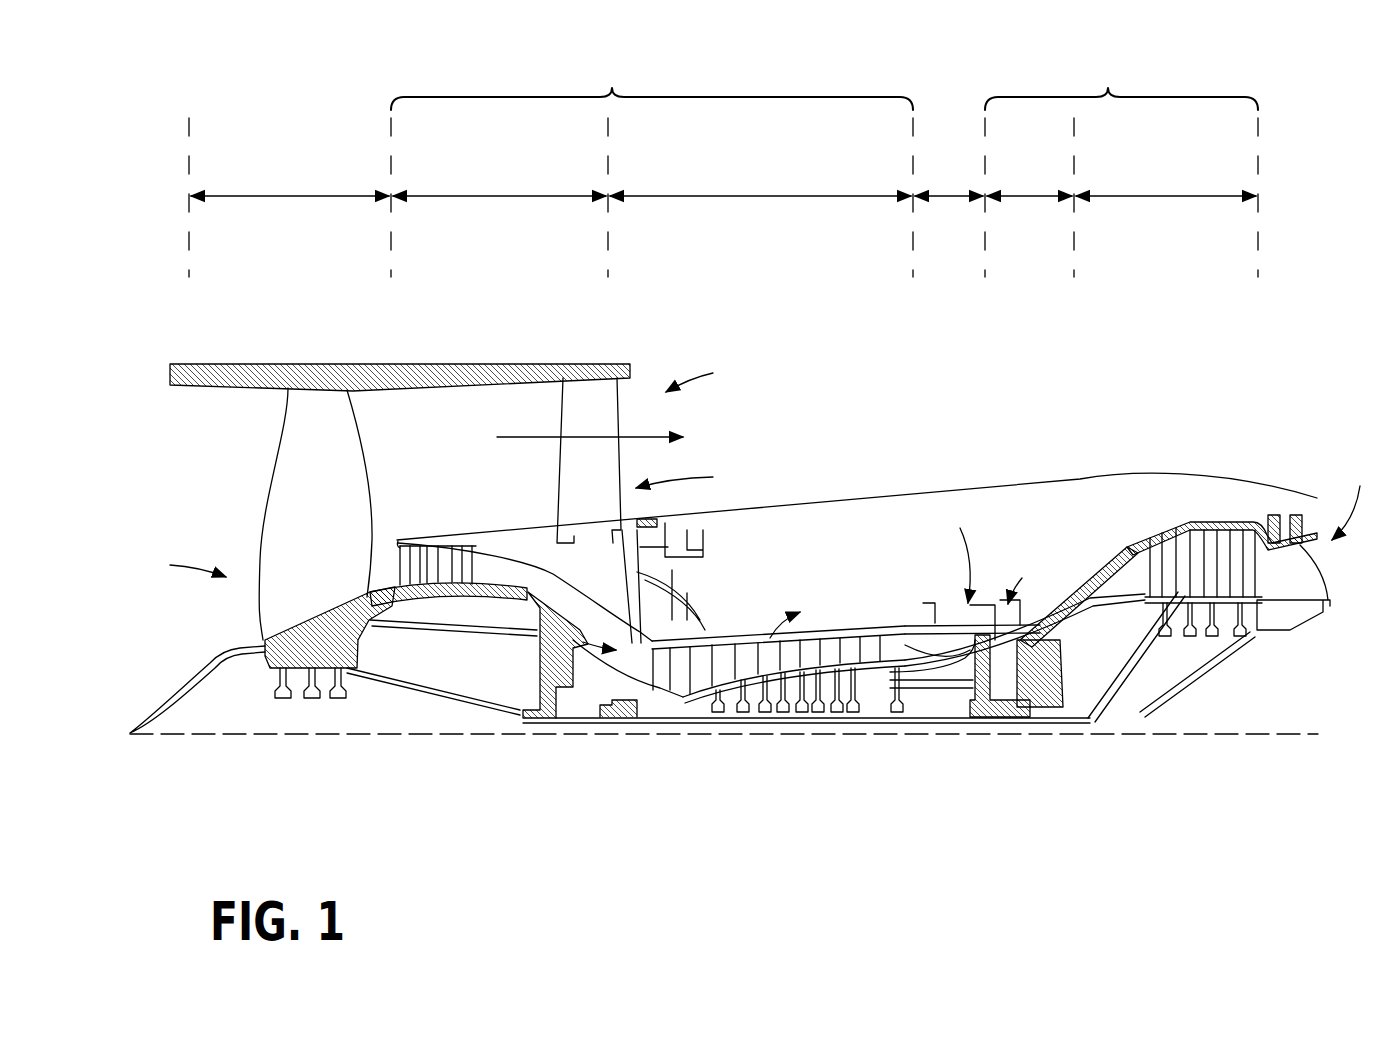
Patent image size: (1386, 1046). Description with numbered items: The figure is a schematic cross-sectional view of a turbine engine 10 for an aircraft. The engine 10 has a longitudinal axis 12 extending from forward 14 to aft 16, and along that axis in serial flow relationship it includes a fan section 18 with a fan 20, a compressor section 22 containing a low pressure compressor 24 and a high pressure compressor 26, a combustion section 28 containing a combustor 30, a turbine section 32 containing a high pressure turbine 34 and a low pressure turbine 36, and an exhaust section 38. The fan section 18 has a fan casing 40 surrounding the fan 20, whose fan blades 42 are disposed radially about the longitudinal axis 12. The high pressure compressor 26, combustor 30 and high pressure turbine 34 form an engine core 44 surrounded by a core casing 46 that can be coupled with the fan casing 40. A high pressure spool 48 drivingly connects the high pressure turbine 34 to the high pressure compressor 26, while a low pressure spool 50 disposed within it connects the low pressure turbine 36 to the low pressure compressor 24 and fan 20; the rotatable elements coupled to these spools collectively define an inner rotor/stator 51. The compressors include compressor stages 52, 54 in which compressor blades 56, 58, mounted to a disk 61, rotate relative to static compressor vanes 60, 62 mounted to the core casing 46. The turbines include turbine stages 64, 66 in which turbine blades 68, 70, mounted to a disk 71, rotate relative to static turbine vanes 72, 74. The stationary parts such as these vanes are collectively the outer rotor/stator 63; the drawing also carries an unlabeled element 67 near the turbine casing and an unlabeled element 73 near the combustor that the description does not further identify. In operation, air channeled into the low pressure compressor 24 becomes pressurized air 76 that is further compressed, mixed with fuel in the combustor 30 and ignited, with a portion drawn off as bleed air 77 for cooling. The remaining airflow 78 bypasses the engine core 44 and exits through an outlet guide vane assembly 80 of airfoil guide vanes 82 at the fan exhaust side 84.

The turbine engine 10 is at (942, 352).
The longitudinal axis 12 is at (290, 736).
The forward 14 is at (137, 500).
The aft 16 is at (1349, 582).
The fan section 18 is at (290, 197).
The fan 20 is at (181, 563).
The compressor section 22 is at (652, 85).
The low pressure compressor 24 is at (500, 197).
The high pressure compressor 26 is at (761, 197).
The combustion section 28 is at (950, 197).
The combustor 30 is at (952, 630).
The turbine section 32 is at (1121, 85).
The high pressure turbine 34 is at (1030, 197).
The low pressure turbine 36 is at (1167, 197).
The exhaust section 38 is at (1233, 590).
The fan casing 40 is at (425, 364).
The fan blades 42 is at (345, 443).
The engine core 44 is at (900, 532).
The core casing 46 is at (1125, 548).
The HP shaft or spool 48 is at (927, 692).
The LP shaft or spool 50 is at (540, 724).
The inner rotor/stator 51 is at (797, 728).
The compressor stages 52 is at (455, 484).
The compressor stages 54 is at (748, 536).
The compressor blades 56 is at (428, 545).
The compressor blades 58 is at (680, 625).
The static compressor vanes 60 is at (405, 545).
The disk 61 is at (425, 590).
The static compressor vanes 62 is at (670, 600).
The outer rotor/stator 63 is at (660, 692).
The turbine stages 64 is at (980, 537).
The turbine stages 66 is at (1240, 414).
The turbine casing 67 is at (1065, 595).
The turbine blades 68 is at (1018, 589).
The turbine blades 70 is at (1245, 535).
The disk 71 is at (1000, 685).
The static turbine vanes 72 is at (975, 625).
The combustion gas flow 73 is at (956, 551).
The static turbine vanes 74 is at (1228, 535).
The pressurized air 76 is at (620, 590).
The bleed air 77 is at (790, 625).
The airflow 78 is at (497, 437).
The outlet guide vane assembly 80 is at (692, 475).
The airfoil guide vanes 82 is at (570, 475).
The fan exhaust side 84 is at (703, 377).